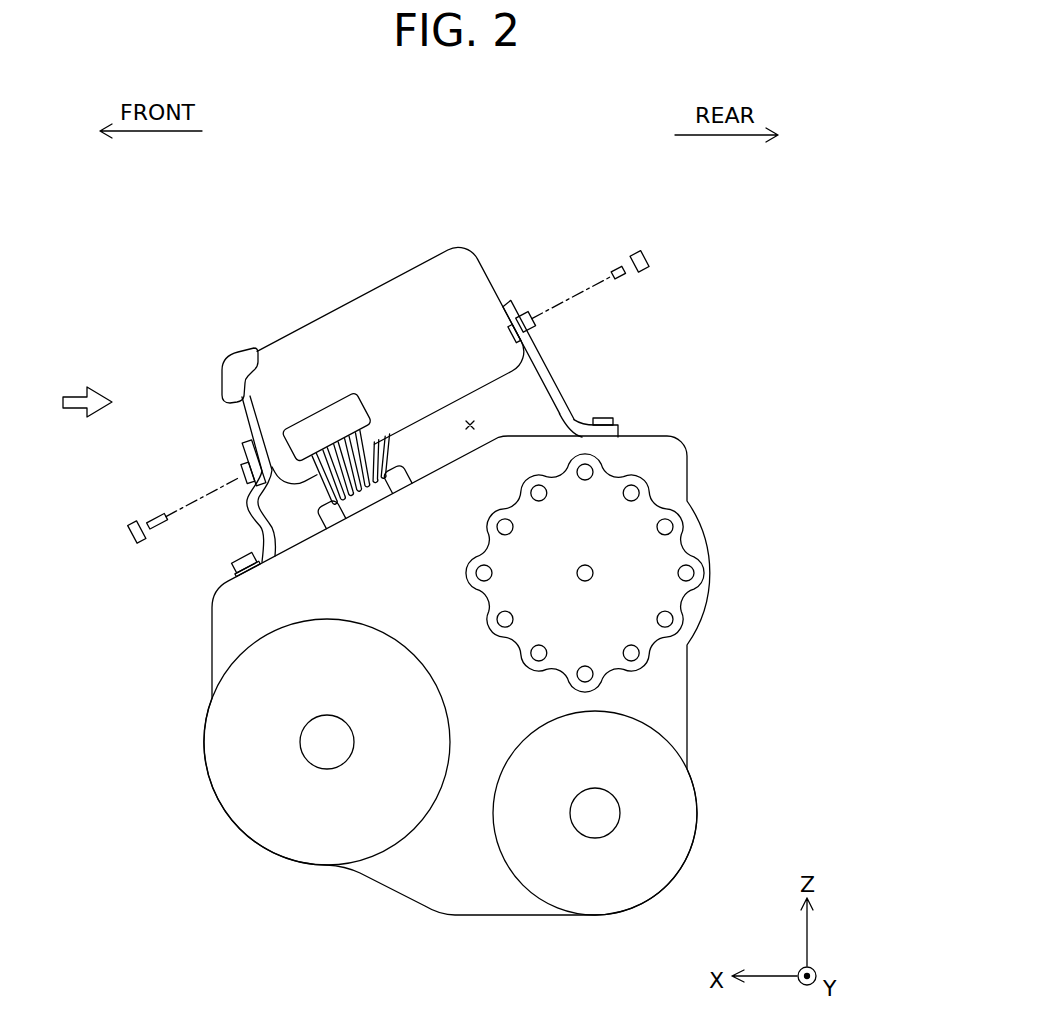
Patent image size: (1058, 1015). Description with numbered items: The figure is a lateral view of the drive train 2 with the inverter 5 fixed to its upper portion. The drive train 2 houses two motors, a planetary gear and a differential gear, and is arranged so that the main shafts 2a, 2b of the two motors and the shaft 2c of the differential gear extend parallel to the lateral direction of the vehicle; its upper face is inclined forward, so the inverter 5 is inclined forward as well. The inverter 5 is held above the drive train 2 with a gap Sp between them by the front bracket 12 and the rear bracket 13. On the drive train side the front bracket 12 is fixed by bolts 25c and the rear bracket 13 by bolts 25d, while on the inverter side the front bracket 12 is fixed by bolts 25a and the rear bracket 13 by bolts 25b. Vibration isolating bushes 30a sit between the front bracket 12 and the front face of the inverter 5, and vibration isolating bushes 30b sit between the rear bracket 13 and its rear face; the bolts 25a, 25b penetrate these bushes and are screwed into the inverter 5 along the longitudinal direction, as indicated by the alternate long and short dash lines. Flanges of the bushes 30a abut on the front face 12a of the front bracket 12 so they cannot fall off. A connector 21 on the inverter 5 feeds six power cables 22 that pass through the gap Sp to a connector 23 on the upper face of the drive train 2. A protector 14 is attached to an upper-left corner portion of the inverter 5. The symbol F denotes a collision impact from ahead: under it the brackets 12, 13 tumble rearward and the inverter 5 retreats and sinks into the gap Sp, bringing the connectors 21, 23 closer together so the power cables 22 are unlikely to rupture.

The drive train 2 is at (440, 897).
The main shaft 2a is at (590, 572).
The main shaft 2b is at (600, 810).
The shaft of the differential gear 2c is at (327, 745).
The inverter 5 is at (268, 357).
The front bracket 12 is at (247, 440).
The front face of the front bracket 12a is at (230, 531).
The rear bracket 13 is at (540, 372).
The protector 14 is at (230, 357).
The connector 21 is at (322, 405).
The power cables 22 is at (383, 473).
The connector 23 is at (398, 478).
The bolts 25a is at (241, 466).
The bolts 25b is at (523, 313).
The bolts 25c is at (243, 554).
The bolts 25d is at (604, 418).
The vibration isolating bushes 30a is at (243, 446).
The vibration isolating bushes 30b is at (512, 306).
The gap Sp is at (468, 424).
The impact F is at (77, 409).